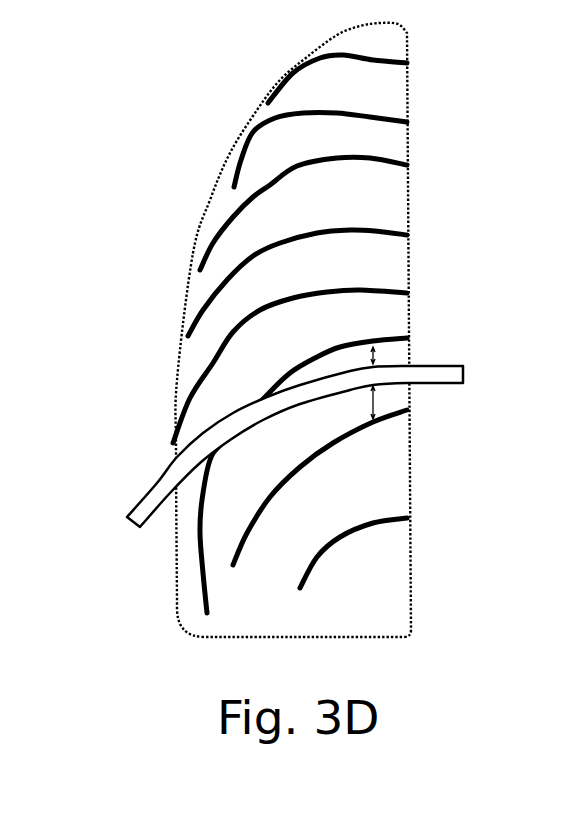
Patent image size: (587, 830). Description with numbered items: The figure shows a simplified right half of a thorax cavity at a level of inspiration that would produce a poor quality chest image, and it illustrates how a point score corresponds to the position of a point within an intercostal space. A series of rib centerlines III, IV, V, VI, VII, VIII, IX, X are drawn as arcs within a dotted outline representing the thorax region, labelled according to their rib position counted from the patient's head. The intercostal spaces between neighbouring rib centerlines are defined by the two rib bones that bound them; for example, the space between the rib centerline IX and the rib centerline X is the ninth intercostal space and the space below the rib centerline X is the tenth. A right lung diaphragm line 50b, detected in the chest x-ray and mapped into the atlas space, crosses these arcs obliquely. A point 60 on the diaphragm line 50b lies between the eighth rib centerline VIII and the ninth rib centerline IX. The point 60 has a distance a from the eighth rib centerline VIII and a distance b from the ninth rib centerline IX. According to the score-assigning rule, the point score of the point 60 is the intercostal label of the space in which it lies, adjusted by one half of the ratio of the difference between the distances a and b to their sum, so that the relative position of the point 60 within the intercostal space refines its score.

The rib centerline III is at (407, 63).
The rib centerline IV is at (407, 122).
The rib centerline V is at (407, 165).
The rib centerline VI is at (407, 235).
The rib centerline VII is at (407, 293).
The eighth rib centerline VIII is at (407, 338).
The ninth rib centerline IX is at (410, 410).
The rib centerline X is at (410, 518).
The point 60 is at (447, 377).
The right lung diaphragm line 50b is at (158, 492).
The distance a is at (383, 354).
The distance b is at (383, 402).